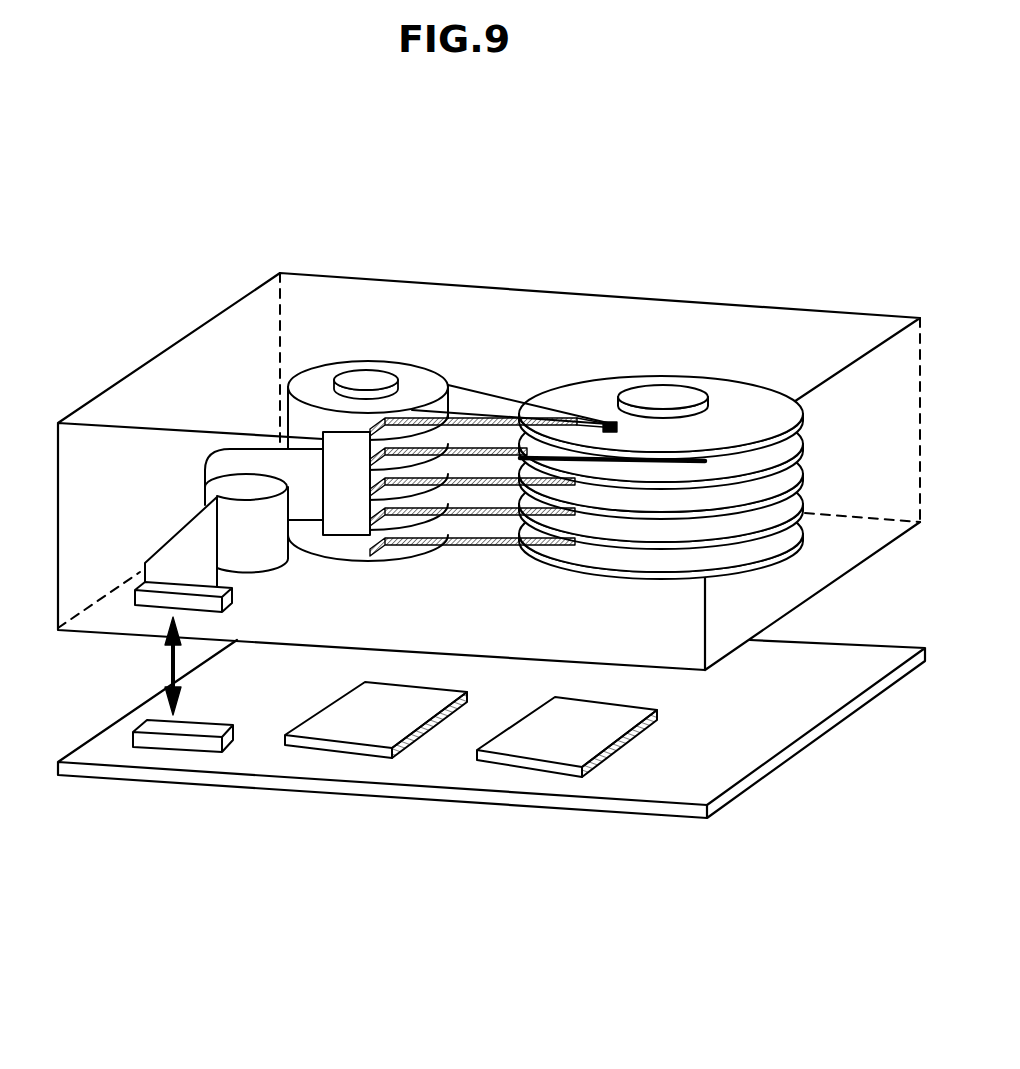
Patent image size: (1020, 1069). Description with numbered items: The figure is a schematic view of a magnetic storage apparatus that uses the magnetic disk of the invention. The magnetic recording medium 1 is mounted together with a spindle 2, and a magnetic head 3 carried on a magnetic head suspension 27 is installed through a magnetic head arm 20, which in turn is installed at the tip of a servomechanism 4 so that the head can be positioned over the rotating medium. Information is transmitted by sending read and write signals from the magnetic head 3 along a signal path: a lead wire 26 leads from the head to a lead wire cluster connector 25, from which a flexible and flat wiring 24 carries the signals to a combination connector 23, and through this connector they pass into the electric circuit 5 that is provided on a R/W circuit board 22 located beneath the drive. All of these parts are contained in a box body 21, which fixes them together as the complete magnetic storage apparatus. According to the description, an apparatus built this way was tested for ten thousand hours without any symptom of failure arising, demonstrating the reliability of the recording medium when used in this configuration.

The magnetic recording medium 1 is at (740, 397).
The spindle 2 is at (665, 397).
The magnetic head 3 is at (610, 415).
The servomechanism 4 is at (363, 372).
The electric circuit 5 is at (535, 745).
The magnetic head arm 20 is at (475, 400).
The box body 21 is at (516, 290).
The R/W circuit board 22 is at (640, 818).
The combination connector 23 is at (140, 718).
The flexible and flat wiring 24 is at (268, 570).
The lead wire cluster connector 25 is at (353, 530).
The lead wire 26 is at (465, 548).
The magnetic head suspension 27 is at (588, 420).